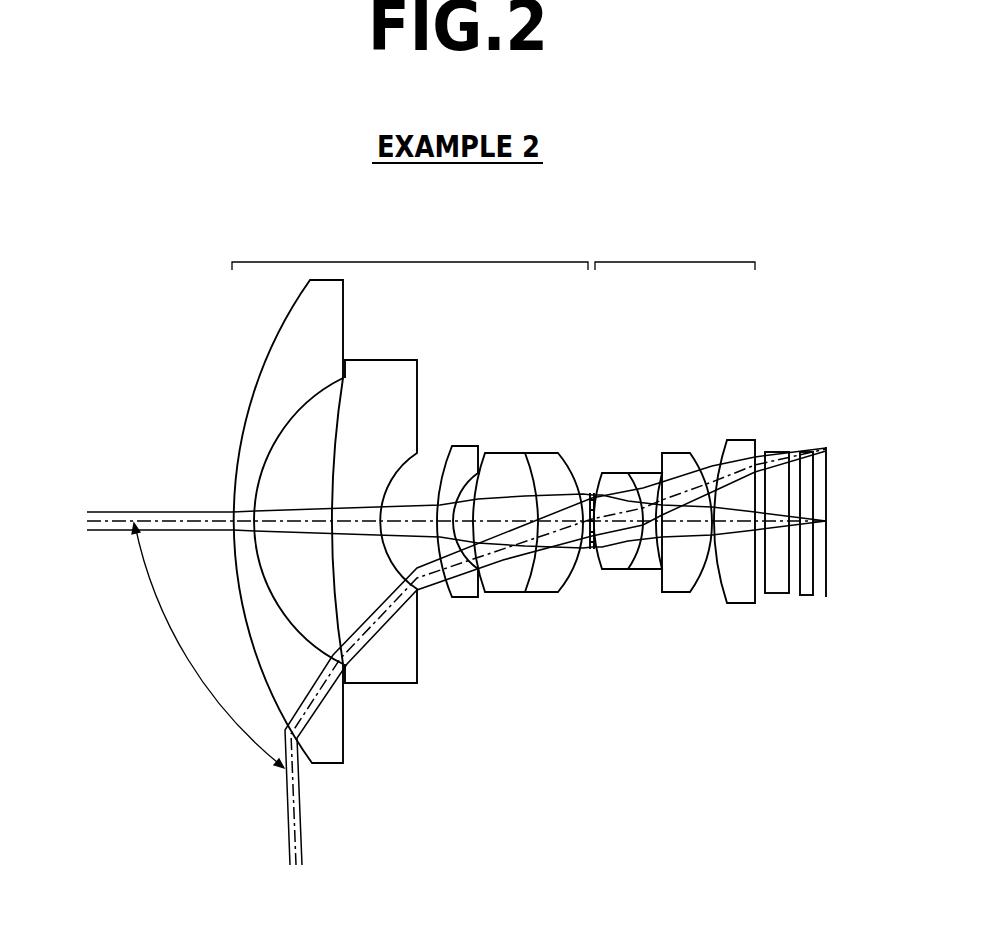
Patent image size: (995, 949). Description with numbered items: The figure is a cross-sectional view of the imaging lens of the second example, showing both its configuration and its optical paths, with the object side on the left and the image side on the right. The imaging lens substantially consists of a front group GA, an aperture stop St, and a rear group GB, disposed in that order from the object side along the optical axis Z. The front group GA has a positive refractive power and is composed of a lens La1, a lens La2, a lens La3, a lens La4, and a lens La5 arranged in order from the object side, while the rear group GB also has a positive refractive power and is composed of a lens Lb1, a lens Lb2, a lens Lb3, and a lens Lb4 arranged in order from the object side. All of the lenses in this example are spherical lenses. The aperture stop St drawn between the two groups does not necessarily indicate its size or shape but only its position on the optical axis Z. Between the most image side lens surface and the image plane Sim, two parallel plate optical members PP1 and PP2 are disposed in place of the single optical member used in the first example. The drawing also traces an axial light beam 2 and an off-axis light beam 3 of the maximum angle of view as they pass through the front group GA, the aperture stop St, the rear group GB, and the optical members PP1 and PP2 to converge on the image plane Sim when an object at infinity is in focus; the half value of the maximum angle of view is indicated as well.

The front group GA is at (410, 248).
The rear group GB is at (675, 248).
The optical axis Z is at (107, 518).
The axial light beam 2 is at (82, 502).
The off-axis light beam 3 is at (312, 868).
The lens La1 is at (333, 763).
The lens La2 is at (383, 683).
The lens La3 is at (464, 597).
The lens La4 is at (505, 592).
The lens La5 is at (542, 592).
The aperture stop St is at (589, 549).
The lens Lb1 is at (615, 569).
The lens Lb2 is at (645, 569).
The lens Lb3 is at (677, 592).
The lens Lb4 is at (742, 603).
The parallel plate optical member PP1 is at (773, 593).
The parallel plate optical member PP2 is at (806, 595).
The image plane Sim is at (826, 580).